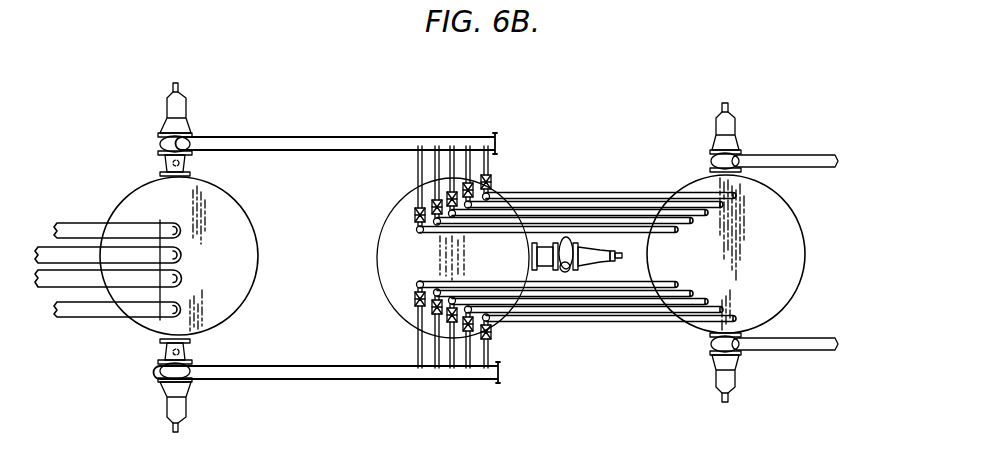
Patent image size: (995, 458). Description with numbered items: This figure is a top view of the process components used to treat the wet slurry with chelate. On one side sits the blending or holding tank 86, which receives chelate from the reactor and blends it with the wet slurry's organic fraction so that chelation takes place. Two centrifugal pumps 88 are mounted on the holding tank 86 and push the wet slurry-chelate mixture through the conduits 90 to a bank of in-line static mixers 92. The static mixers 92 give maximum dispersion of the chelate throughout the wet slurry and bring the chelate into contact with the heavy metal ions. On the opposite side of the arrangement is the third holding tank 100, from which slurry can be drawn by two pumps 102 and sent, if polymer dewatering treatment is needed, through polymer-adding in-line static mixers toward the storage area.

The blending or holding tank 86 is at (240, 243).
The centrifugal pump 88 is at (178, 108).
The conduit 90 is at (283, 139).
The in-line static mixer 92 is at (482, 180).
The third holding tank 100 is at (777, 283).
The pump 102 is at (731, 125).